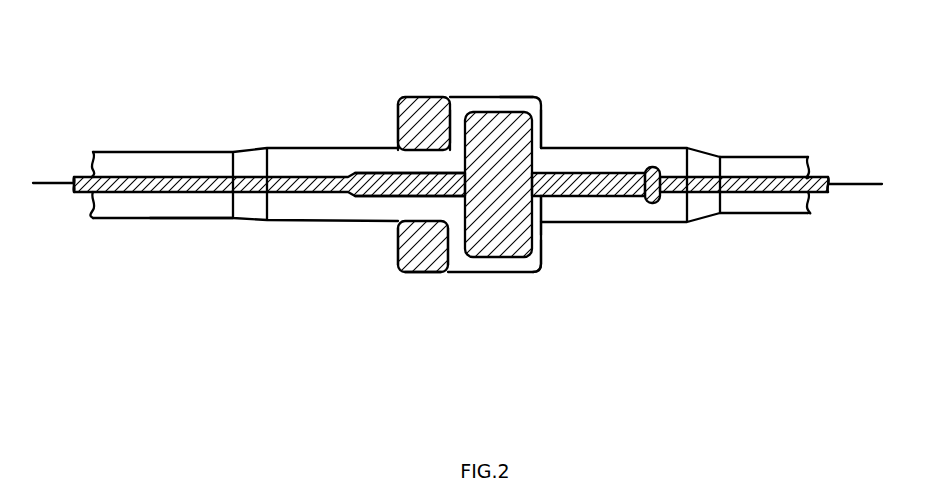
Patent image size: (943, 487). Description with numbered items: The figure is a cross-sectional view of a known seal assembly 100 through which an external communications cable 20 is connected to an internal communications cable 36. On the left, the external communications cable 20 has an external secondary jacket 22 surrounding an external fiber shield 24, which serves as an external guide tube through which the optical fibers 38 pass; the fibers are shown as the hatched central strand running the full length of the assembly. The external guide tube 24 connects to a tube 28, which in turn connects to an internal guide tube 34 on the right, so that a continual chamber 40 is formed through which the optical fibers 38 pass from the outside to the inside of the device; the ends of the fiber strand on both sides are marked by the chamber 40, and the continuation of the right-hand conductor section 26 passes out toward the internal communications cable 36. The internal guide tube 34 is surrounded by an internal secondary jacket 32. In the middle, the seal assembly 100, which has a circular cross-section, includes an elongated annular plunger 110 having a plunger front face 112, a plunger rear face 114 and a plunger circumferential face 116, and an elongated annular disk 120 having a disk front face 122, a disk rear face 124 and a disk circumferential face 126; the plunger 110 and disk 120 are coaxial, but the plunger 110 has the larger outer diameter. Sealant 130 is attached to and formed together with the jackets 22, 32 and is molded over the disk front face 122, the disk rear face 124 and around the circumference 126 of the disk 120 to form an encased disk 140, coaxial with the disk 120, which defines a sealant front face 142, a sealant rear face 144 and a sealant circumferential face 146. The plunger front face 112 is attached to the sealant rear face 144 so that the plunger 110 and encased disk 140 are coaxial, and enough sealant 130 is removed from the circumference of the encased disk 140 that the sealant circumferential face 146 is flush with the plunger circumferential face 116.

The external communications cable 20 is at (122, 217).
The external secondary jacket 22 is at (178, 212).
The external fiber shield 24 is at (202, 187).
The right conductor section 26 is at (680, 185).
The tube 28 is at (367, 192).
The internal secondary jacket 32 is at (728, 160).
The internal guide tube 34 is at (768, 175).
The internal communications cable 36 is at (808, 175).
The optical fibers 38 is at (55, 183).
The continual chamber 40 is at (74, 178).
The seal assembly 100 is at (595, 335).
The plunger 110 is at (408, 265).
The plunger front face 112 is at (448, 265).
The plunger rear face 114 is at (398, 250).
The plunger circumferential face 116 is at (422, 272).
The disk 120 is at (541, 262).
The disk front face 122 is at (541, 224).
The disk rear face 124 is at (452, 125).
The disk circumferential face 126 is at (497, 110).
The sealant 130 is at (440, 140).
The encased disk 140 is at (538, 98).
The sealant front face 142 is at (545, 120).
The sealant rear face 144 is at (447, 150).
The sealant circumferential face 146 is at (518, 97).